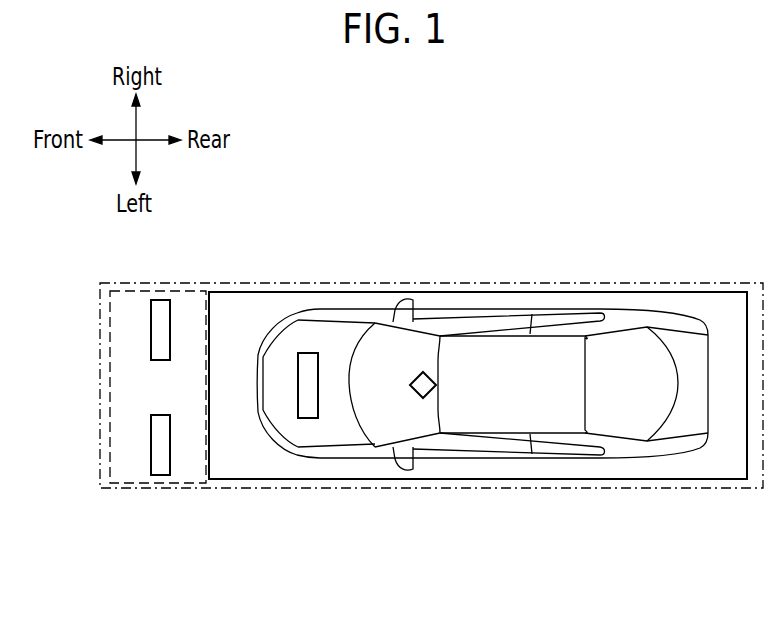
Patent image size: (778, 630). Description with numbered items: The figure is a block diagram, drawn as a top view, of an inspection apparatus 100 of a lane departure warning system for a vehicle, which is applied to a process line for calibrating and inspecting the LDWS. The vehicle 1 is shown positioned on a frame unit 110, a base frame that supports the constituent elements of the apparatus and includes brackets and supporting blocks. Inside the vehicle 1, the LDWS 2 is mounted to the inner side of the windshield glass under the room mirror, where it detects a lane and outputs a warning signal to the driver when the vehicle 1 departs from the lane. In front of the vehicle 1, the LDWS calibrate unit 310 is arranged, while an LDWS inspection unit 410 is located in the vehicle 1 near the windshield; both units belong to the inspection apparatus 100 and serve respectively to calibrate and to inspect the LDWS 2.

The inspection apparatus 100 is at (425, 176).
The frame unit 110 is at (617, 492).
The LDWS calibrate unit 310 is at (110, 387).
The vehicle 1 is at (553, 308).
The LDWS inspection unit 410 is at (318, 387).
The LDWS 2 is at (415, 393).